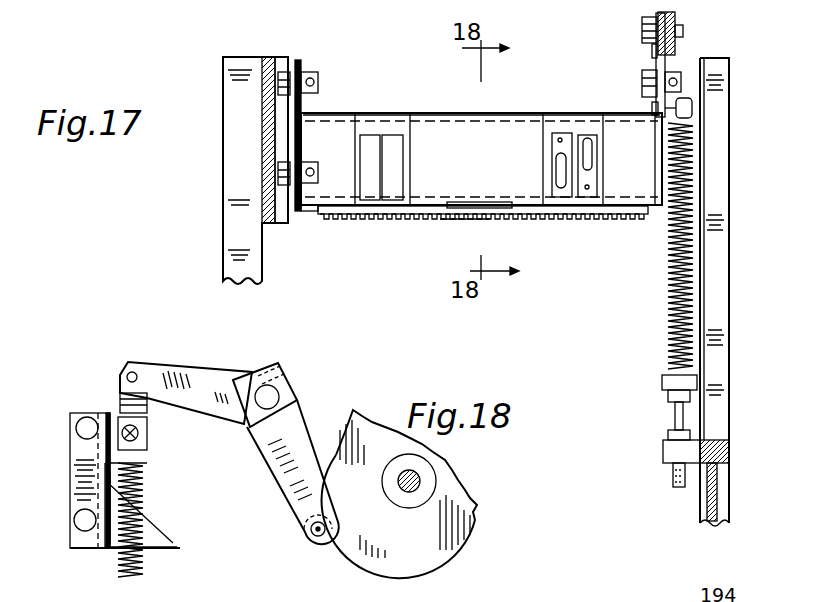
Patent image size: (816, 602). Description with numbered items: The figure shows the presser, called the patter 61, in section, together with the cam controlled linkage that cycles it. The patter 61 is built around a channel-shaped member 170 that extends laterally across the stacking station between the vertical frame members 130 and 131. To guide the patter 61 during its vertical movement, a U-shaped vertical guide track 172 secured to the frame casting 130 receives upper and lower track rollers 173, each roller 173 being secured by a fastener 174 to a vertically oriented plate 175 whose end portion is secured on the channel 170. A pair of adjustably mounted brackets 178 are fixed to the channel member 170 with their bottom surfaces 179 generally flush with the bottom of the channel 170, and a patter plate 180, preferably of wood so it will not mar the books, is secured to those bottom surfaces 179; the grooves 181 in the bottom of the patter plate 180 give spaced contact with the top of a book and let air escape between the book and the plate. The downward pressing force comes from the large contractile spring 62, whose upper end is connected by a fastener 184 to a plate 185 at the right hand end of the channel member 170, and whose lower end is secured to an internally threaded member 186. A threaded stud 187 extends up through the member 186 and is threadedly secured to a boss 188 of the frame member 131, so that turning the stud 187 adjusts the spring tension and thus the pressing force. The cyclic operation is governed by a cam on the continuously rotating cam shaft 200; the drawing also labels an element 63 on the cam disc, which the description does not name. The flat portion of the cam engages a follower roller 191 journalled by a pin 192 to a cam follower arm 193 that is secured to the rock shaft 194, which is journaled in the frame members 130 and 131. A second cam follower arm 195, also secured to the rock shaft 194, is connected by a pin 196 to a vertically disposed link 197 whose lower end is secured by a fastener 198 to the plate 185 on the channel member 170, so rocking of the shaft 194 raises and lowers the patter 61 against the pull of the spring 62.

In FIG. 17, the patter 61 is at (515, 106).
In FIG. 18, the patter 61 is at (104, 348).
In FIG. 17, the large contractile spring 62 is at (672, 284).
In FIG. 18, the large contractile spring 62 is at (143, 573).
In FIG. 18, the disc 63 is at (438, 528).
In FIG. 17, the vertical frame member 130 is at (232, 236).
In FIG. 17, the vertical frame member 131 is at (713, 202).
In FIG. 17, the channel-shaped member 170 is at (421, 134).
In FIG. 18, the channel-shaped member 170 is at (90, 550).
In FIG. 17, the vertical guide track 172 is at (282, 62).
In FIG. 17, the track roller 173 is at (288, 72).
In FIG. 18, the track roller 173 is at (82, 418).
In FIG. 17, the fastener 174 is at (306, 72).
In FIG. 17, the vertically oriented plate 175 is at (300, 213).
In FIG. 18, the vertically oriented plate 175 is at (82, 489).
In FIG. 17, the adjustably mounted bracket 178 is at (394, 180).
In FIG. 18, the adjustably mounted bracket 178 is at (152, 535).
In FIG. 17, the bottom surface 179 is at (410, 222).
In FIG. 18, the bottom surface 179 is at (182, 547).
In FIG. 17, the patter plate 180 is at (503, 211).
In FIG. 17, the groove 181 is at (463, 221).
In FIG. 17, the fastener 184 is at (692, 110).
In FIG. 17, the plate 185 is at (670, 65).
In FIG. 17, the internally threaded member 186 is at (662, 383).
In FIG. 17, the threaded stud 187 is at (678, 410).
In FIG. 17, the boss 188 is at (672, 453).
In FIG. 18, the follower roller 191 is at (330, 538).
In FIG. 18, the pin 192 is at (310, 535).
In FIG. 18, the cam follower arm 193 is at (283, 458).
In FIG. 18, the rock shaft 194 is at (272, 392).
In FIG. 18, the cam follower arm 195 is at (183, 382).
In FIG. 17, the pin 196 is at (678, 28).
In FIG. 18, the pin 196 is at (133, 371).
In FIG. 17, the vertically disposed link 197 is at (655, 50).
In FIG. 18, the vertically disposed link 197 is at (140, 407).
In FIG. 17, the fastener 198 is at (642, 80).
In FIG. 18, the fastener 198 is at (140, 433).
In FIG. 18, the cam shaft 200 is at (420, 487).